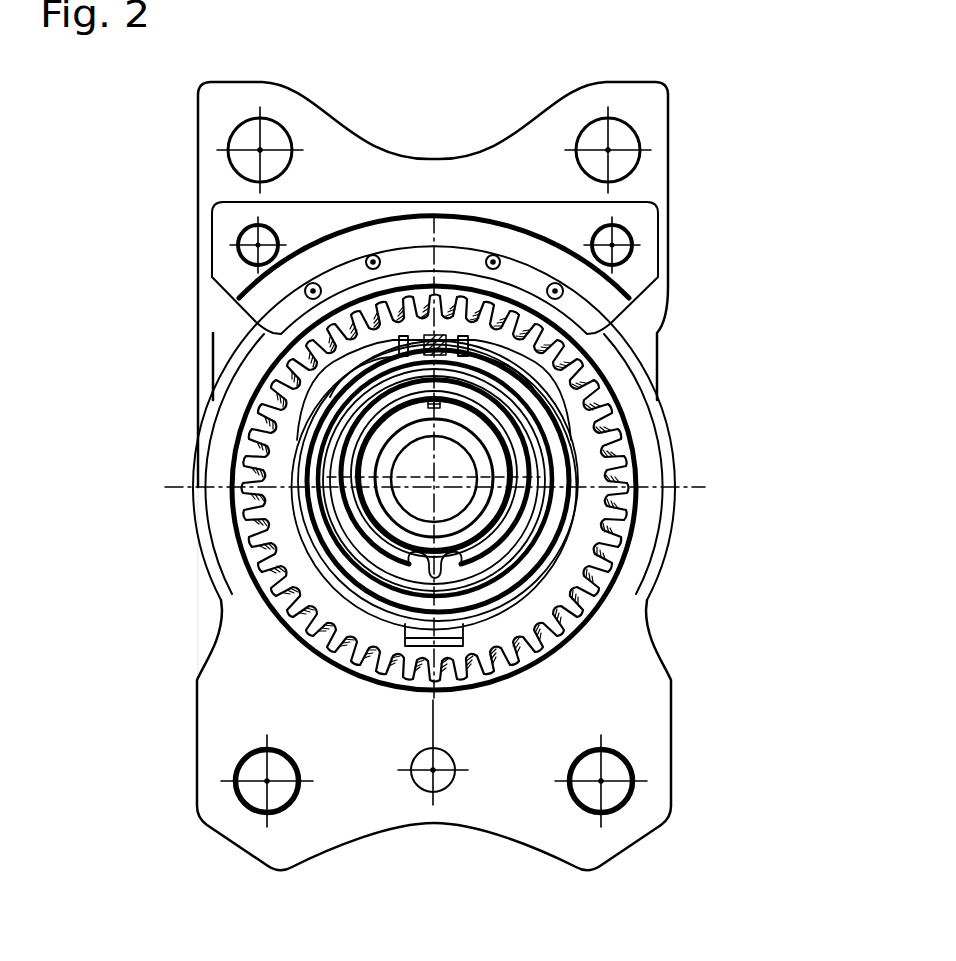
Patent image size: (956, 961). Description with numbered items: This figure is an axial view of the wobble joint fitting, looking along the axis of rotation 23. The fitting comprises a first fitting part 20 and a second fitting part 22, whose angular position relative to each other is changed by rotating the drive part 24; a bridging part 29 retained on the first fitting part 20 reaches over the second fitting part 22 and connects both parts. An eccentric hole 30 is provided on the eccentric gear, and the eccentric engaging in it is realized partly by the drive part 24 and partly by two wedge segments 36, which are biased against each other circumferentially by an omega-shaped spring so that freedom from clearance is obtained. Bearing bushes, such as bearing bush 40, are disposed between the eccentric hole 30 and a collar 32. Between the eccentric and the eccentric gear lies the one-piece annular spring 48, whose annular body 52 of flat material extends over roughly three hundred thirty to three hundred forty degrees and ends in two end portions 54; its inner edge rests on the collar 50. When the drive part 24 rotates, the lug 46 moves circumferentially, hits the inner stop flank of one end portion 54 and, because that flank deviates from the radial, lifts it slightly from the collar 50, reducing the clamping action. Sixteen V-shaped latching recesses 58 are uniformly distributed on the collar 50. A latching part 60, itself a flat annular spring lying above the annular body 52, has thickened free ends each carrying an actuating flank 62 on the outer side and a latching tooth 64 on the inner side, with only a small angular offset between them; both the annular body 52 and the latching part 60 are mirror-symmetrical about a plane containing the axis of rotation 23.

The first fitting part 20 is at (637, 107).
The second fitting part 22 is at (640, 693).
The axis of rotation 23 is at (690, 440).
The drive part 24 is at (418, 460).
The bridging part 29 is at (220, 220).
The eccentric hole 30 is at (357, 540).
The collar 32 is at (453, 527).
The wedge segments 36 is at (512, 541).
The bearing bush 40 is at (550, 482).
The lug 46 is at (437, 334).
The annular spring 48 is at (500, 343).
The collar 50 is at (558, 420).
The annular body 52 is at (266, 329).
The end portions 54 is at (405, 336).
The latching recesses 58 is at (330, 447).
The latching part 60 is at (378, 608).
The actuating flank 62 is at (310, 437).
The latching tooth 64 is at (540, 387).